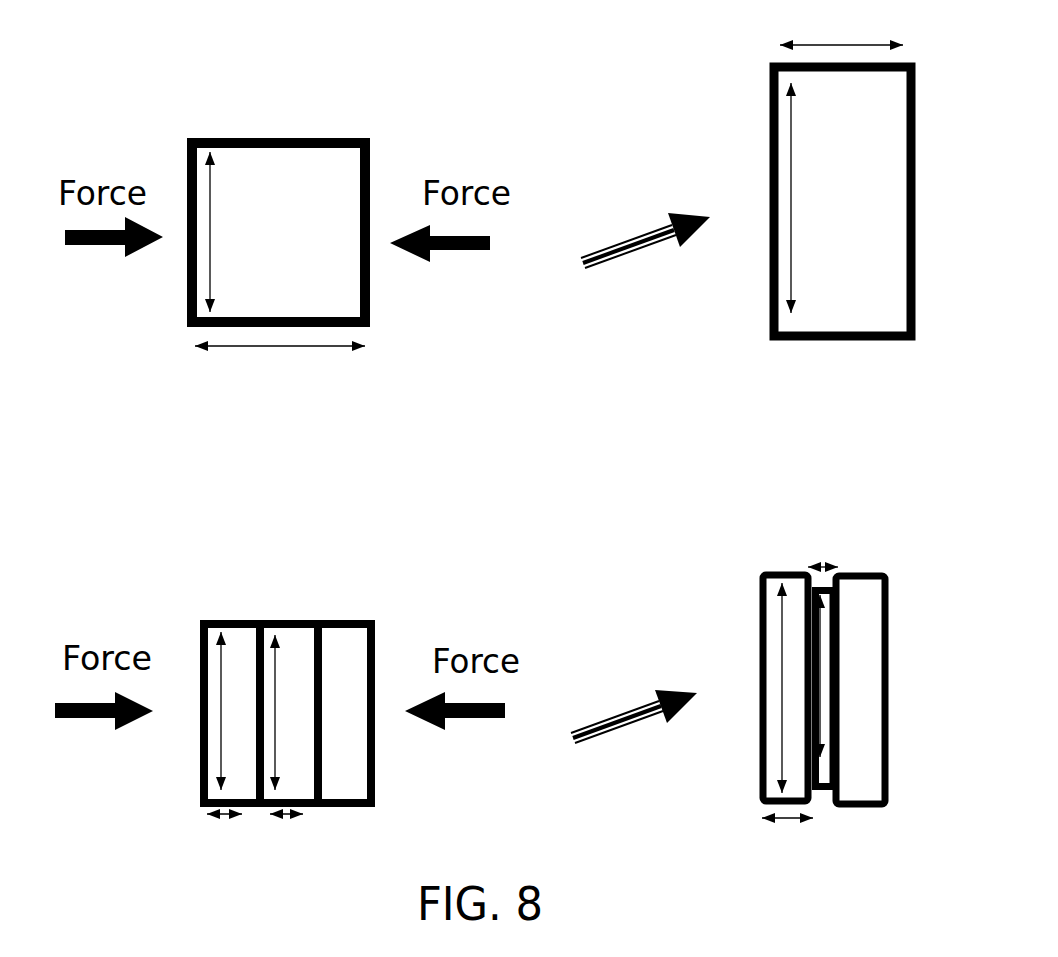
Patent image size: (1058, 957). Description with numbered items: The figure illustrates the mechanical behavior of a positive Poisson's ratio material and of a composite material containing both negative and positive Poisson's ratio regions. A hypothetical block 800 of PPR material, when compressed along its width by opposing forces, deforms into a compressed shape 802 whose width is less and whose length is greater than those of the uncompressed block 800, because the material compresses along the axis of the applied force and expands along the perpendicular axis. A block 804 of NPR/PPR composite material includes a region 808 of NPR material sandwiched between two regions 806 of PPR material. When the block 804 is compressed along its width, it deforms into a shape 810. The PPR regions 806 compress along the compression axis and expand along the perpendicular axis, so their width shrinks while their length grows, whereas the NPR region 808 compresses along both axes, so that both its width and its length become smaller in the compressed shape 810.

The block of PPR material 800 is at (278, 259).
The compressed block 802 is at (842, 169).
The block of NPR/PPR composite material 804 is at (124, 821).
The regions of PPR material 806 is at (203, 643).
The region of NPR material 808 is at (287, 620).
The compressed shape of composite block 810 is at (871, 866).